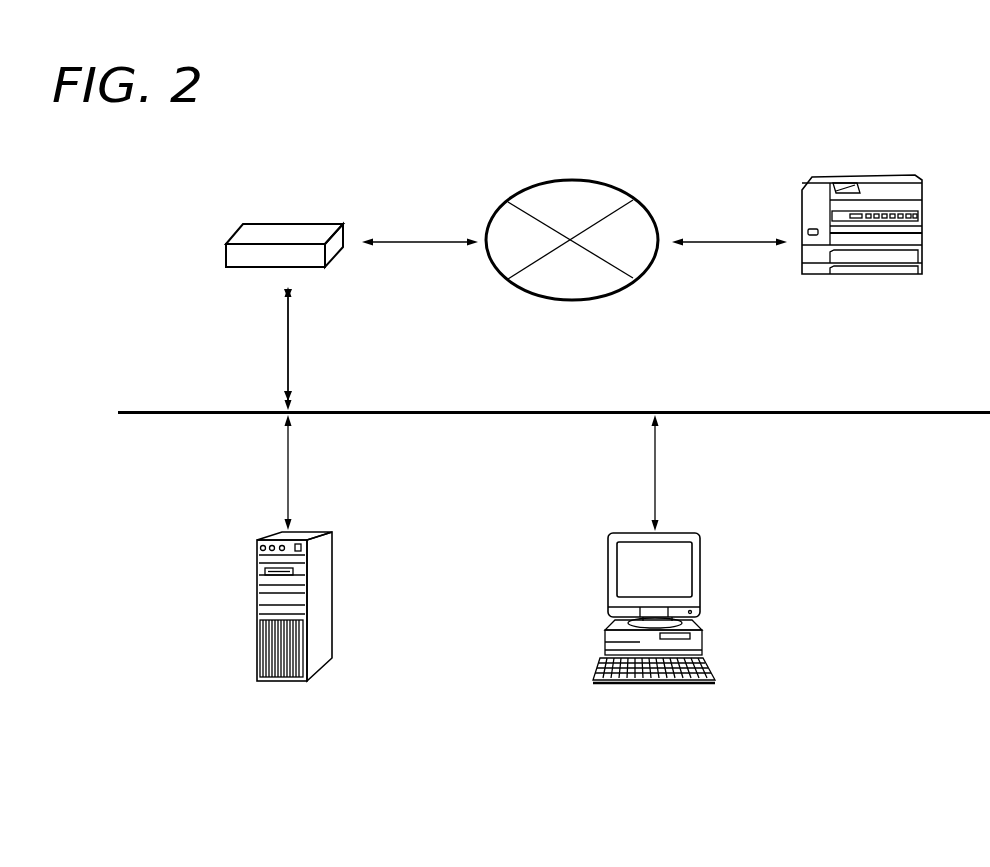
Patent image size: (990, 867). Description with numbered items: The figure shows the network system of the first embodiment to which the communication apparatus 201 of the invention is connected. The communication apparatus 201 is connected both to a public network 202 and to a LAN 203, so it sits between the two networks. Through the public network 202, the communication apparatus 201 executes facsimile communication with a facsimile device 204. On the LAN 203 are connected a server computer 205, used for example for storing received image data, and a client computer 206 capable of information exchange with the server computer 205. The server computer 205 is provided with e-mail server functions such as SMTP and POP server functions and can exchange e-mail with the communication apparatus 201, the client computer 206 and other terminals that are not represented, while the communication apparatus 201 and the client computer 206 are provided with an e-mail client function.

The communication apparatus 201 is at (290, 224).
The public network 202 is at (575, 180).
The LAN 203 is at (862, 411).
The facsimile device 204 is at (862, 176).
The server computer 205 is at (288, 683).
The client computer 206 is at (654, 685).